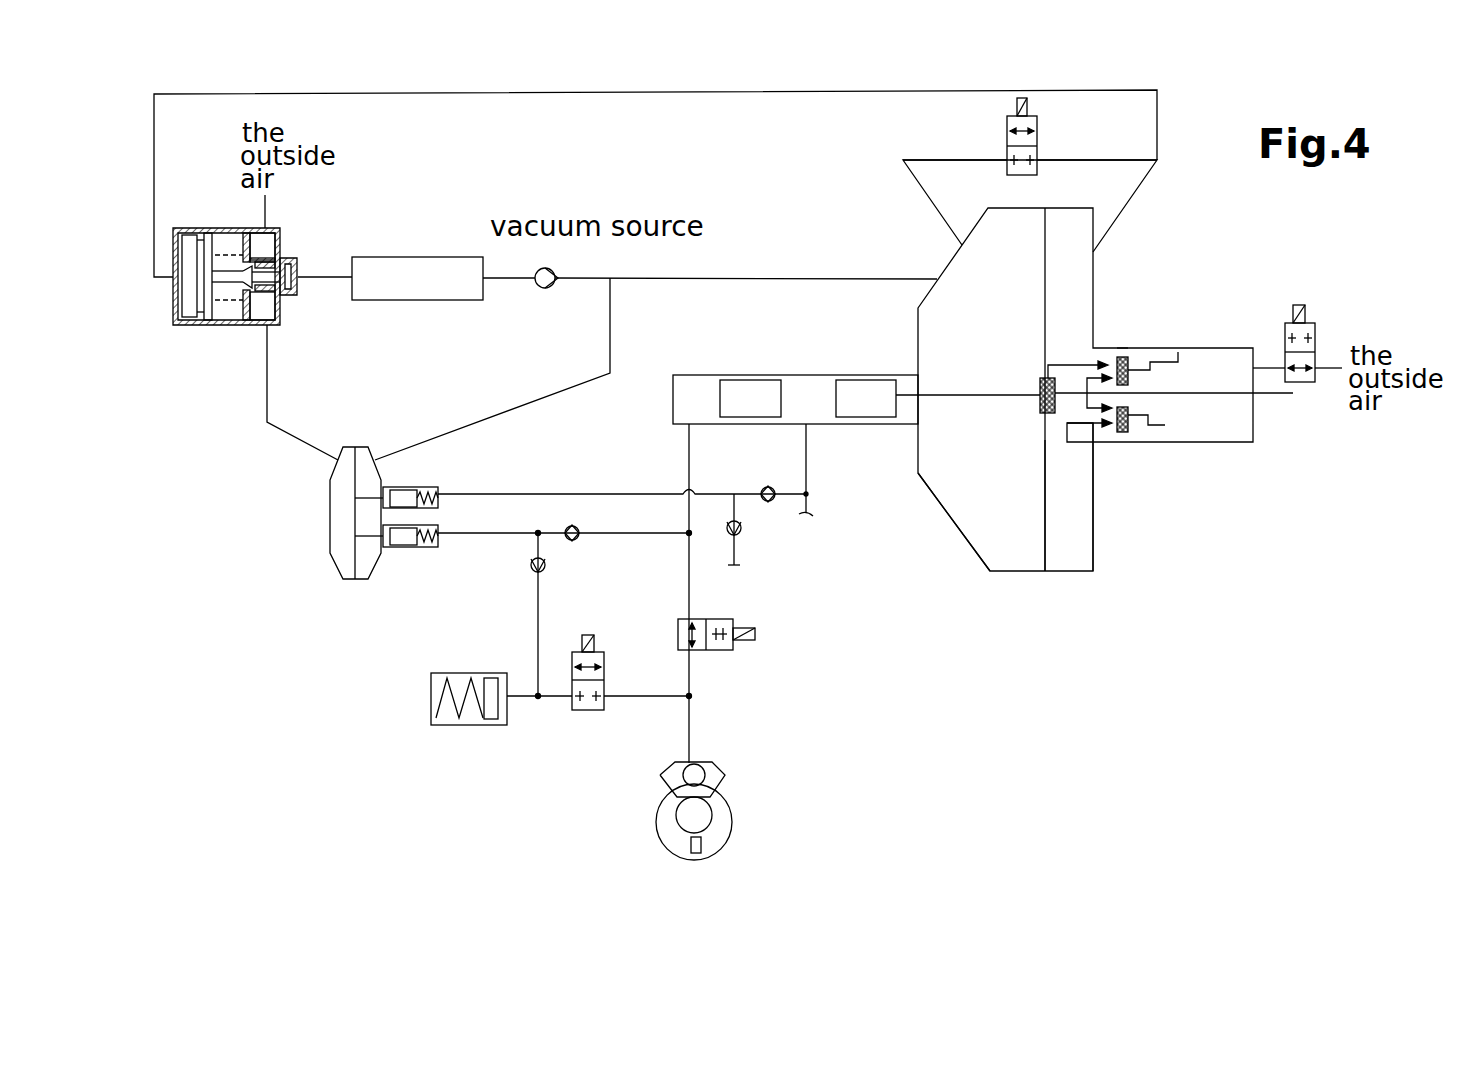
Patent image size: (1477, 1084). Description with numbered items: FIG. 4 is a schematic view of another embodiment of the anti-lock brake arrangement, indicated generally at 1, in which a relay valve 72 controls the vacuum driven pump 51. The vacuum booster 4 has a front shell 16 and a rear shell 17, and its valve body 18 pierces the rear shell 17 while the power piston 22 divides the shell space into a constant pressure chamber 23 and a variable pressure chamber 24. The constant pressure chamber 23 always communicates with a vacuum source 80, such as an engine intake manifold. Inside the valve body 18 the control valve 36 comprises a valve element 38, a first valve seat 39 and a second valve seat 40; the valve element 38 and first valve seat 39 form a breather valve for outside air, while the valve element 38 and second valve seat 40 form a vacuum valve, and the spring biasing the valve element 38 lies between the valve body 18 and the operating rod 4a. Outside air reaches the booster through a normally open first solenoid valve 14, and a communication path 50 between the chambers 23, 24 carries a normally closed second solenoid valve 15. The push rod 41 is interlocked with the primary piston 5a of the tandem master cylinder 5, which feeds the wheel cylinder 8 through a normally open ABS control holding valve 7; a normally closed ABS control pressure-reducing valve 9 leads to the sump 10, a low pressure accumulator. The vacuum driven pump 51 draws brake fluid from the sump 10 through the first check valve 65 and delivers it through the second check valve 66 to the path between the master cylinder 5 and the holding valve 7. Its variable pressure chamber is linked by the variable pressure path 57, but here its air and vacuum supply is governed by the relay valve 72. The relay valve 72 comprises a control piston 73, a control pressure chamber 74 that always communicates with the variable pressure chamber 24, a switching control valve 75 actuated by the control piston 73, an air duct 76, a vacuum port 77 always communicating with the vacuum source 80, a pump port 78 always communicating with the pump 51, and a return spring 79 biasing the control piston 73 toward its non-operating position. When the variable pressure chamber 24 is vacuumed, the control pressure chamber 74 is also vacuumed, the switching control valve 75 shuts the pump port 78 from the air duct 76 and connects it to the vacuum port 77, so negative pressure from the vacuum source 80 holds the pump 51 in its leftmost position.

The brake system 1 is at (903, 658).
The vacuum booster 4 is at (1015, 571).
The operating rod 4a is at (1280, 395).
The tandem master cylinder 5 is at (812, 375).
The primary piston 5a is at (866, 408).
The ABS control holding valve 7 is at (733, 652).
The wheel cylinder 8 is at (715, 772).
The ABS control pressure-reducing valve 9 is at (592, 710).
The sump 10 is at (470, 725).
The first solenoid valve 14 is at (1307, 325).
The second solenoid valve 15 is at (1037, 118).
The front shell 16 is at (955, 525).
The rear shell 17 is at (1093, 545).
The valve body 18 is at (1122, 348).
The power piston 22 is at (1045, 500).
The constant pressure chamber 23 is at (1004, 297).
The variable pressure chamber 24 is at (1086, 297).
The control valve 36 is at (1232, 506).
The valve element 38 is at (1130, 398).
The first valve seat 39 is at (1128, 425).
The second valve seat 40 is at (1097, 428).
The push rod 41 is at (978, 400).
The communication path 50 is at (1128, 190).
The vacuum driven pump 51 is at (330, 535).
The variable pressure path 57 is at (575, 94).
The first check valve 65 is at (745, 535).
The second check valve 66 is at (772, 486).
The relay valve 72 is at (185, 325).
The control piston 73 is at (222, 228).
The control pressure chamber 74 is at (192, 290).
The switching control valve 75 is at (265, 248).
The air duct 76 is at (265, 228).
The vacuum port 77 is at (310, 280).
The pump port 78 is at (268, 325).
The return spring 79 is at (219, 305).
The vacuum source 80 is at (442, 257).